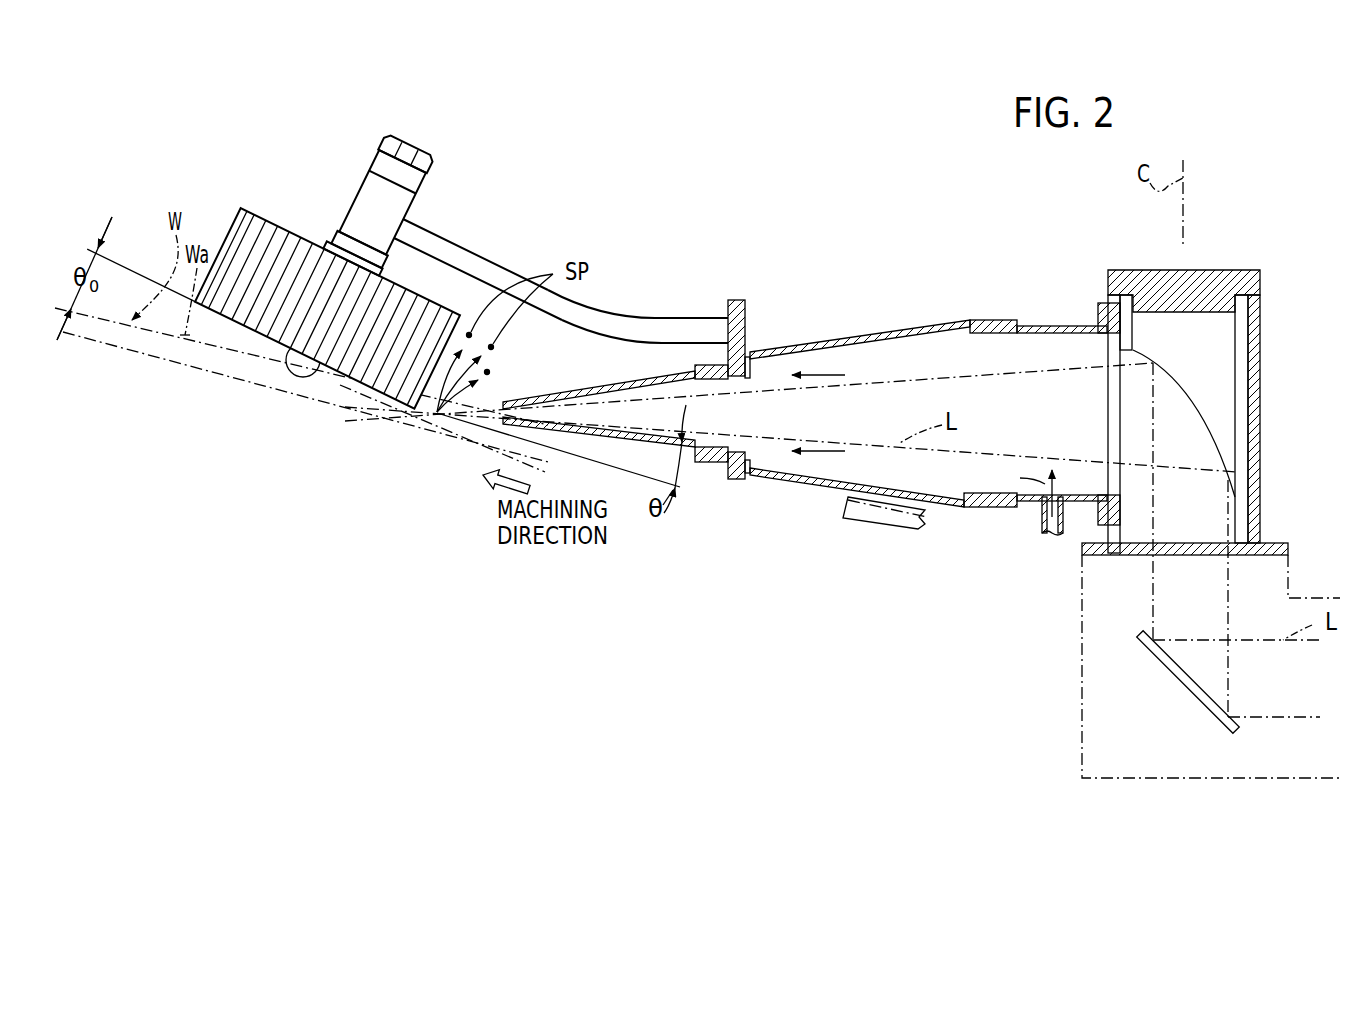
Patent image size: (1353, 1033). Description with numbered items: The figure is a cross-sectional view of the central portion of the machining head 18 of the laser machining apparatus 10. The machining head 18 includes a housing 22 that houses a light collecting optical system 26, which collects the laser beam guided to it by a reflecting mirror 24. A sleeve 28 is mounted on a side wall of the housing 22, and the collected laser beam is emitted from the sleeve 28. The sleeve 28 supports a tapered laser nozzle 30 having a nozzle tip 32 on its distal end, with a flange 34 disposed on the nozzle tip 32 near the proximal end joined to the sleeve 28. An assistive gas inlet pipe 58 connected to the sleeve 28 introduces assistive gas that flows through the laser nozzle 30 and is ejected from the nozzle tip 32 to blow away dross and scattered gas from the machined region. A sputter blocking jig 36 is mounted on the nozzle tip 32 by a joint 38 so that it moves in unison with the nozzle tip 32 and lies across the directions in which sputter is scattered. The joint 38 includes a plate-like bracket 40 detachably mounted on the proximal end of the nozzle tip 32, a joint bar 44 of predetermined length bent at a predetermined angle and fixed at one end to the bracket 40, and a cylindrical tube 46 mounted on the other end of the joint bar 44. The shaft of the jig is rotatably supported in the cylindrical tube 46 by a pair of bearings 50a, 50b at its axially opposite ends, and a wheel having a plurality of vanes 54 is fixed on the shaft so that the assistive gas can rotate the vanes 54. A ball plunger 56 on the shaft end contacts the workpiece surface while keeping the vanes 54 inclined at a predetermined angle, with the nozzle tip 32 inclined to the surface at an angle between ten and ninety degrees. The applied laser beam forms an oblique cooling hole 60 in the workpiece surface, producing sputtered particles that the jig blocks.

The laser machining apparatus 10 is at (921, 469).
The machining head 18 is at (921, 469).
The housing 22 is at (1226, 283).
The reflecting mirror 24 is at (1172, 668).
The light collecting optical system 26 is at (1222, 377).
The sleeve 28 is at (1060, 327).
The laser nozzle 30 is at (920, 320).
The nozzle tip 32 is at (563, 392).
The flange 34 is at (713, 463).
The sputter blocking jig 36 is at (232, 320).
The joint 38 is at (504, 267).
The bracket 40 is at (737, 300).
The joint bar 44 is at (631, 320).
The cylindrical tube 46 is at (367, 191).
The bearing 50a is at (412, 181).
The bearing 50b is at (368, 254).
The vanes 54 is at (247, 236).
The ball plunger 56 is at (305, 368).
The assistive gas inlet pipe 58 is at (888, 522).
The cooling hole 60 is at (388, 418).